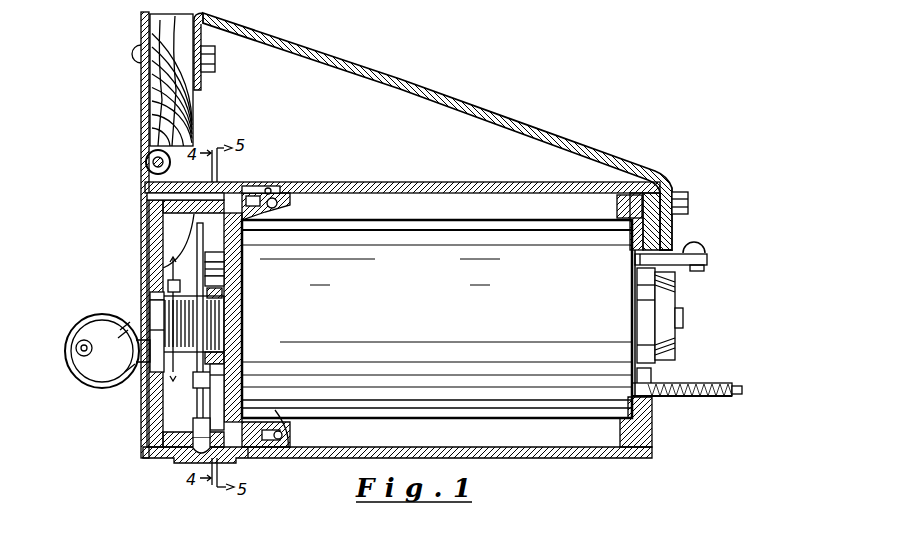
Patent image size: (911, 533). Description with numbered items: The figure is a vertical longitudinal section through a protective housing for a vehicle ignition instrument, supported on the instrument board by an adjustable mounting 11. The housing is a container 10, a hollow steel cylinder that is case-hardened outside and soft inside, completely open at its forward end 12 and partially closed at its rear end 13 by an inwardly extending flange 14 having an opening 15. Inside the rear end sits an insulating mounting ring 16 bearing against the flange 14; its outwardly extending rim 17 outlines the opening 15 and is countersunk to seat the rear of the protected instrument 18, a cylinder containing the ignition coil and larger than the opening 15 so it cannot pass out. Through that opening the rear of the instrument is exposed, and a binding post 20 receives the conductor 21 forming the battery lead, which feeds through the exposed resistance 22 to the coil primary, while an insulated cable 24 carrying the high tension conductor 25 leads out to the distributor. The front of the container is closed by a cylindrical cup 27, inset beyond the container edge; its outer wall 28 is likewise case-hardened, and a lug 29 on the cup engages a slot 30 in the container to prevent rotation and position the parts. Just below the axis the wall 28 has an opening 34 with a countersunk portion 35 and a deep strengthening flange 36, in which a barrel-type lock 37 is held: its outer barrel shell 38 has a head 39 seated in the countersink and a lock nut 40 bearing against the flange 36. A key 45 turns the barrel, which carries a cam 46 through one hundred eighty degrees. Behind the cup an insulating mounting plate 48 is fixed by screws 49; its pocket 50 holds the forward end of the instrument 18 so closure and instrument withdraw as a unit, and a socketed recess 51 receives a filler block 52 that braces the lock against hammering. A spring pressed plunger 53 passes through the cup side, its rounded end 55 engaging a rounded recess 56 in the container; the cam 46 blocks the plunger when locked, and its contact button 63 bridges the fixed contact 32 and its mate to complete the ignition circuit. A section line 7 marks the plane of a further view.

The pin 7 is at (174, 321).
The container 10 is at (336, 184).
The mounting 11 is at (216, 50).
The forward end 12 is at (146, 450).
The rear end 13 is at (652, 380).
The flange 14 is at (654, 426).
The opening 15 is at (660, 398).
The mounting ring 16 is at (617, 199).
The outwardly extending rim 17 is at (668, 242).
The protected instrument 18 is at (438, 319).
The binding post 20 is at (708, 262).
The conductor 21 is at (706, 256).
The exposed resistance 22 is at (668, 302).
The insulated cable 24 is at (716, 382).
The conductor 25 is at (750, 386).
The cylindrical cup 27 is at (250, 184).
The outer wall 28 is at (150, 216).
The lug 29 is at (152, 230).
The slot 30 is at (150, 199).
The contact 32 is at (238, 274).
The opening 34 is at (163, 298).
The countersunk portion 35 is at (162, 373).
The flange 36 is at (168, 282).
The lock 37 is at (150, 310).
The outer barrel shell 38 is at (238, 289).
The head 39 is at (112, 376).
The lock nut 40 is at (238, 344).
The key 45 is at (66, 352).
The cam 46 is at (205, 400).
The mounting plate 48 is at (290, 422).
The screws 49 is at (276, 188).
The pocket 50 is at (278, 212).
The socketed recess 51 is at (238, 310).
The filler block 52 is at (238, 332).
The spring pressed plunger 53 is at (198, 458).
The rounded end 55 is at (204, 460).
The rounded recess 56 is at (246, 465).
The contact button 63 is at (238, 260).